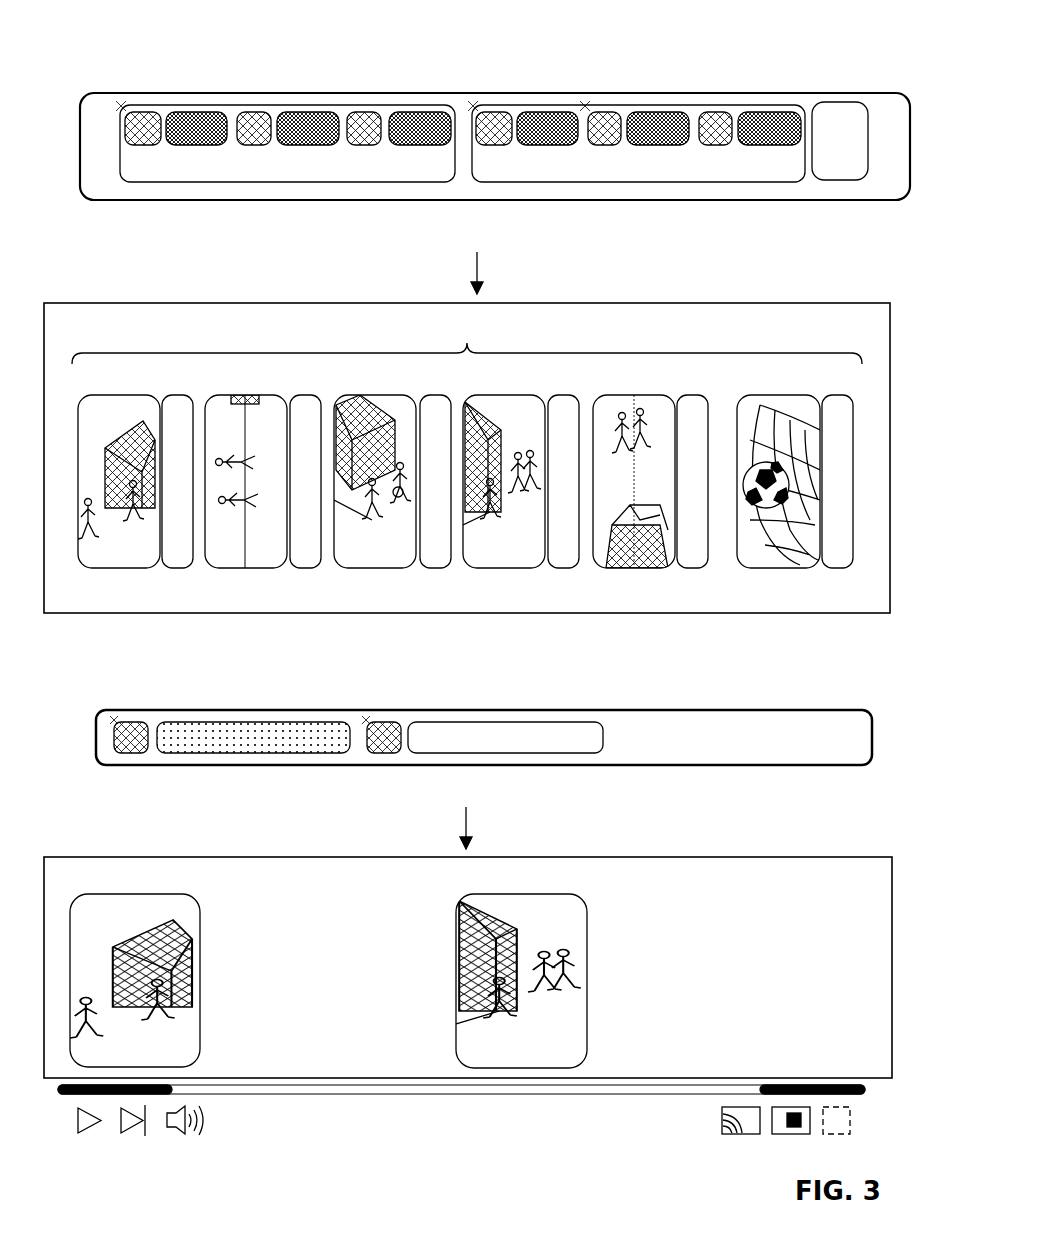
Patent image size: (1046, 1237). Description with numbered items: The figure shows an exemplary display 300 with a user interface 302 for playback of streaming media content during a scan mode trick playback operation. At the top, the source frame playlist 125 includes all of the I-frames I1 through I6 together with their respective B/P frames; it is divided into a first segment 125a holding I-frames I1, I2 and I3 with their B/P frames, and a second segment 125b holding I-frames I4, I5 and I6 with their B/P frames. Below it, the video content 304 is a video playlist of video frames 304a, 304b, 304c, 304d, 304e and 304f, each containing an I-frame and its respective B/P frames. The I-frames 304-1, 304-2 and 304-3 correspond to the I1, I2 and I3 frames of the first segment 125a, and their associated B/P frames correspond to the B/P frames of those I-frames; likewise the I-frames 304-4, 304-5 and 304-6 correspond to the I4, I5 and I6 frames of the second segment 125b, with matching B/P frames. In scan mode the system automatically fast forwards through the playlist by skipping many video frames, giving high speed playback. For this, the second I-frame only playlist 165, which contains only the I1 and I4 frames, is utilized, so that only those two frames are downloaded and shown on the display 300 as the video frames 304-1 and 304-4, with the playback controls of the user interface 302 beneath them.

The source frame playlist 125 is at (602, 238).
The first segment 125a is at (207, 103).
The second segment 125b is at (561, 103).
The video content 304 is at (444, 339).
The video frame 304a is at (76, 388).
The video frame 304b is at (318, 388).
The video frame 304c is at (446, 388).
The video frame 304d is at (575, 388).
The video frame 304e is at (708, 388).
The video frame 304f is at (847, 388).
The I-frame 304-1 is at (155, 602).
The I-frame 304-2 is at (210, 602).
The I-frame 304-3 is at (342, 602).
The I-frame 304-4 is at (470, 602).
The I-frame 304-5 is at (602, 602).
The I-frame 304-6 is at (745, 602).
The second I-frame only playlist 165 is at (617, 786).
The display 300 is at (112, 857).
The user interface 302 is at (900, 1050).